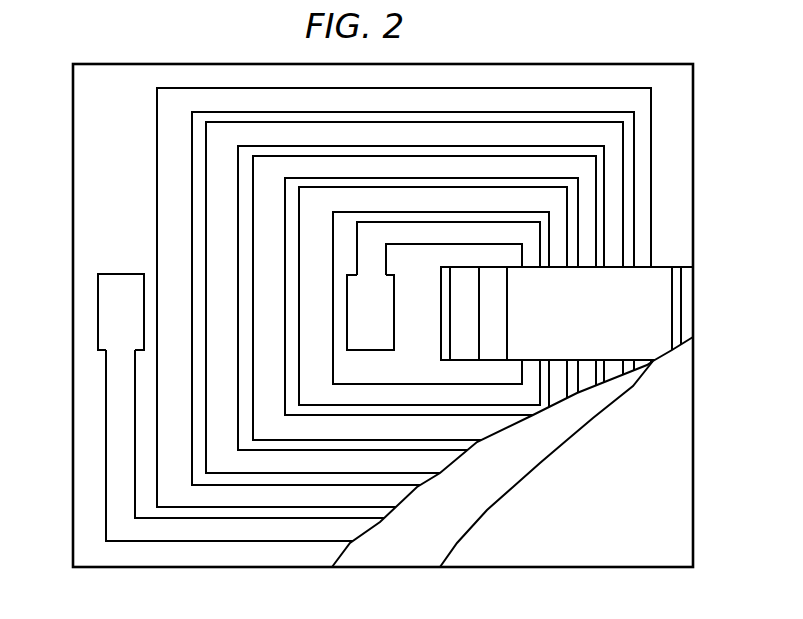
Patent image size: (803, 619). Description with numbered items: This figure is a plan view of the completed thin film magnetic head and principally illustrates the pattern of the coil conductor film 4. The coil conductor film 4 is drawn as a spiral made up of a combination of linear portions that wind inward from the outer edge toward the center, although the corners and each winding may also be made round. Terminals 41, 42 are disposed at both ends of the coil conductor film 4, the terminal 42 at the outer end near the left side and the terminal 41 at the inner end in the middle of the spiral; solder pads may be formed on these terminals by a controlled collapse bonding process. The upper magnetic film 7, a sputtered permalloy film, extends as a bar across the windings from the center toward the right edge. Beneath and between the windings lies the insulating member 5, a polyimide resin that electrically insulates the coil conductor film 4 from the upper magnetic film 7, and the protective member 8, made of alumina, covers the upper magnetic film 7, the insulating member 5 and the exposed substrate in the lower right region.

The coil conductor film 4 is at (616, 193).
The terminal 41 is at (373, 338).
The terminal 42 is at (107, 328).
The upper magnetic film 7 is at (663, 298).
The protective member 8 is at (685, 445).
The insulating member 5 is at (388, 558).